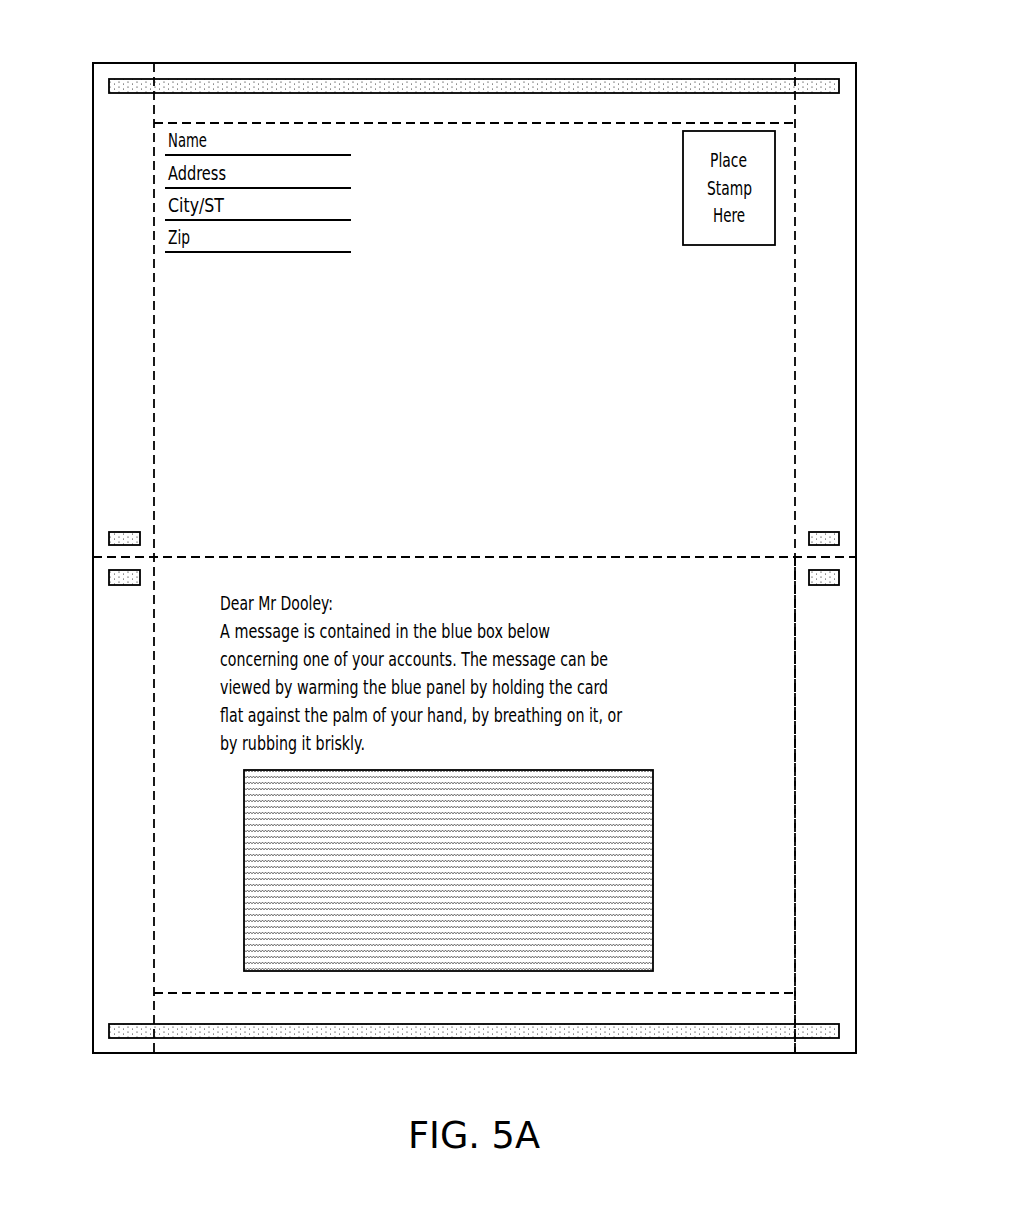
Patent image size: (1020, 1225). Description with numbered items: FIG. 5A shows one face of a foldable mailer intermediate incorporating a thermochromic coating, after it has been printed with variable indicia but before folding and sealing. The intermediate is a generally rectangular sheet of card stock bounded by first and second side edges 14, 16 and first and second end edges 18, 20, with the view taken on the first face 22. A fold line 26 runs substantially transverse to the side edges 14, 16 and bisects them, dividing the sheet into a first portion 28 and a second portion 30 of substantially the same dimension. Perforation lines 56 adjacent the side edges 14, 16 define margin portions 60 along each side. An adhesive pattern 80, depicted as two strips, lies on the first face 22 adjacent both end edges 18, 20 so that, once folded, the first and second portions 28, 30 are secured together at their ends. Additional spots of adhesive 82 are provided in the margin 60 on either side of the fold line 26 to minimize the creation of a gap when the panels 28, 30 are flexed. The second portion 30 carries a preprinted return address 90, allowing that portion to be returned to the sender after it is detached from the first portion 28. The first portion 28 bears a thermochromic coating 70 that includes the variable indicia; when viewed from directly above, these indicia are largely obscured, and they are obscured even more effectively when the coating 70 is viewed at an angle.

The first side edge 14 is at (93, 763).
The second side edge 16 is at (856, 385).
The first end edge 18 is at (263, 1053).
The second end edge 20 is at (573, 63).
The first face 22 is at (770, 792).
The fold line 26 is at (715, 557).
The first portion 28 is at (770, 858).
The second portion 30 is at (768, 268).
The perforation lines 56 is at (795, 655).
The margin portions 60 is at (105, 330).
The coating 70 is at (653, 884).
The adhesive pattern 80 is at (839, 88).
The spots of adhesive 82 is at (109, 538).
The return address 90 is at (560, 380).